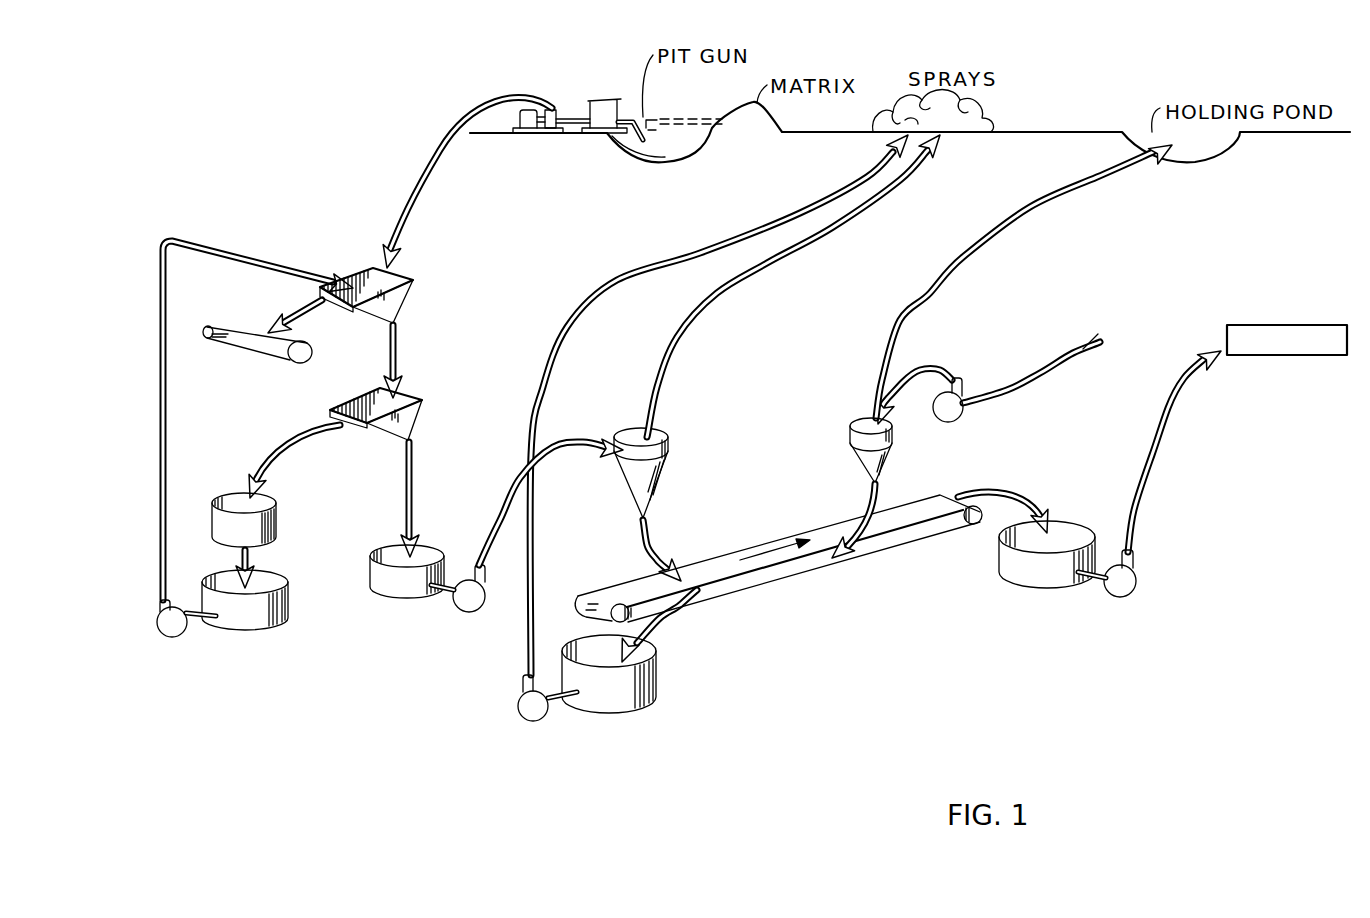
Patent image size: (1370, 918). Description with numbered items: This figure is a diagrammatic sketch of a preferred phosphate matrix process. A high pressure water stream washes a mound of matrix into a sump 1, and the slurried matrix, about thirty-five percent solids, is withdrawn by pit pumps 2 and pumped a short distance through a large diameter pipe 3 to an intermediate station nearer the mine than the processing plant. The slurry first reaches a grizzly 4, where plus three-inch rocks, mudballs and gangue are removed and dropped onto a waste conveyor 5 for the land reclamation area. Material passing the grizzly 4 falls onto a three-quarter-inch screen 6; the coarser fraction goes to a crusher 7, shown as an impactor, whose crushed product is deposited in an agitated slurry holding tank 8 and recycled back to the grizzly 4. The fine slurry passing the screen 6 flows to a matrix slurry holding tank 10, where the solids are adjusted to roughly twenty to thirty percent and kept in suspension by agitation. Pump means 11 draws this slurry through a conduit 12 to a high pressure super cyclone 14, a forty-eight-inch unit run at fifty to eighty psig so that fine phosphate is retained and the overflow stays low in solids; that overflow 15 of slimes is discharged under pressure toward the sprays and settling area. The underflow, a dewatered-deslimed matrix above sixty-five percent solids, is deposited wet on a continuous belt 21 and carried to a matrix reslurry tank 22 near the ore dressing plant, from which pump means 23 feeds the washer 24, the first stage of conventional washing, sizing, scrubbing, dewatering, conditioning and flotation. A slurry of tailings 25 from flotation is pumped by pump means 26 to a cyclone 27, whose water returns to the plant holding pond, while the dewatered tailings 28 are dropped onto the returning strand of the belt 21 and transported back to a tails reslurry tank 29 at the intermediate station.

The sump 1 is at (662, 148).
The pit pumps 2 is at (556, 110).
The large diameter pipe 3 is at (414, 205).
The grizzly 4 is at (398, 281).
The waste conveyor 5 is at (296, 341).
The ¾-inch screen 6 is at (407, 398).
The crusher 7 is at (279, 523).
The slurry holding tank 8 is at (278, 628).
The matrix slurry holding tank 10 is at (413, 600).
The pump means 11 is at (467, 612).
The conduit 12 is at (505, 490).
The high pressure super cyclone 14 is at (657, 500).
The overflow line 15 is at (653, 384).
The continuous belt 21 is at (907, 505).
The matrix reslurry tank 22 is at (1053, 588).
The pump means 23 is at (1135, 587).
The washer 24 is at (1262, 325).
The slurry of tailings 25 is at (1092, 342).
The pump means 26 is at (957, 417).
The cyclone 27 is at (862, 466).
The dewatered tailings 28 is at (857, 547).
The tails reslurry tank 29 is at (623, 707).